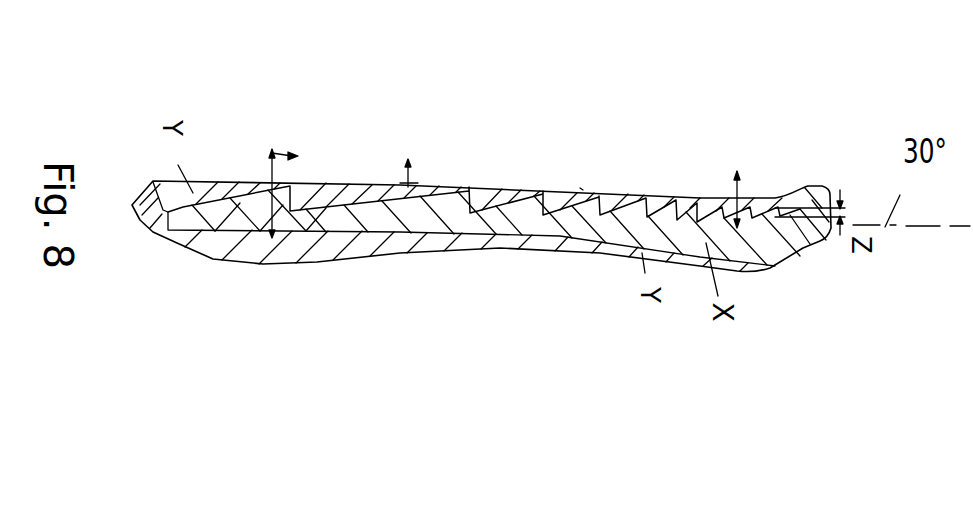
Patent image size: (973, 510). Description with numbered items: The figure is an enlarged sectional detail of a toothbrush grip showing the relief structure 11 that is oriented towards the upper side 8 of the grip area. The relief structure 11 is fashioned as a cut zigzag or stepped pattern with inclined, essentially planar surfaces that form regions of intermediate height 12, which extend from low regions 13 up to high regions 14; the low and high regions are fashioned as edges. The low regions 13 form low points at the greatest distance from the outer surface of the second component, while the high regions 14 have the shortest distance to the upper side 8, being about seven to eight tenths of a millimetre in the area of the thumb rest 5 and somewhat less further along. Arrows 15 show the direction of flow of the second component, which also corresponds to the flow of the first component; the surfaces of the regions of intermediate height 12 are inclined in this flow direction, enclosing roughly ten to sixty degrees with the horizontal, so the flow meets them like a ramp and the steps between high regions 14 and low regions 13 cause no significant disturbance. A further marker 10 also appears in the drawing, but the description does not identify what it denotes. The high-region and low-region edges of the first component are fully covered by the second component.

The thumb rest 5 is at (771, 195).
The upper side 8 is at (690, 186).
The reference marker 10 is at (748, 198).
The relief structure 11 is at (580, 188).
The regions of intermediate height 12 is at (239, 190).
The low regions 13 is at (330, 217).
The high regions 14 is at (318, 308).
The arrows 15 is at (238, 160).